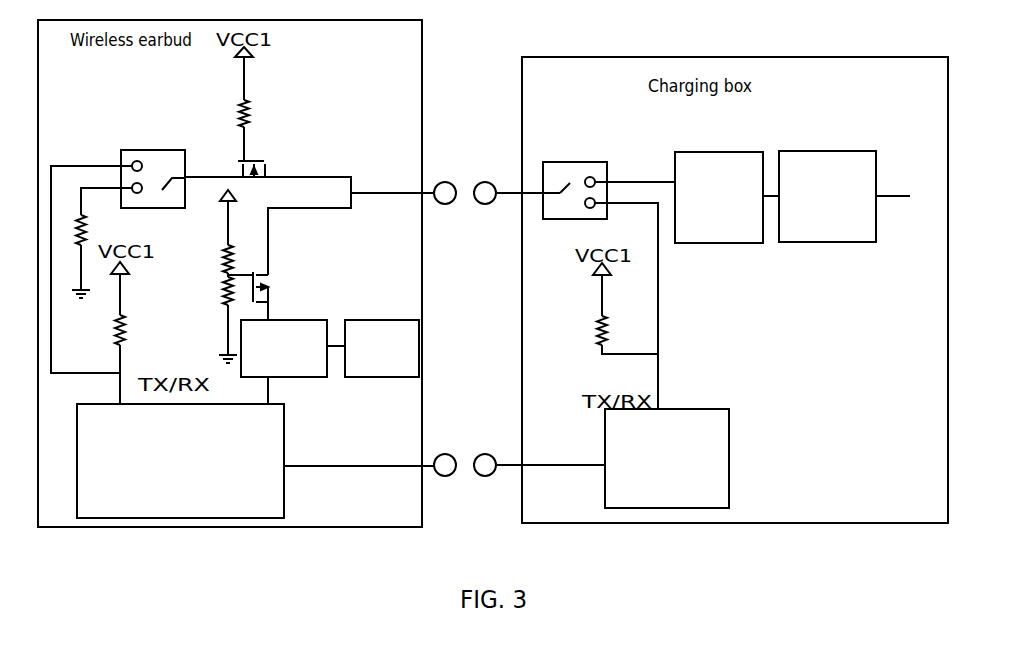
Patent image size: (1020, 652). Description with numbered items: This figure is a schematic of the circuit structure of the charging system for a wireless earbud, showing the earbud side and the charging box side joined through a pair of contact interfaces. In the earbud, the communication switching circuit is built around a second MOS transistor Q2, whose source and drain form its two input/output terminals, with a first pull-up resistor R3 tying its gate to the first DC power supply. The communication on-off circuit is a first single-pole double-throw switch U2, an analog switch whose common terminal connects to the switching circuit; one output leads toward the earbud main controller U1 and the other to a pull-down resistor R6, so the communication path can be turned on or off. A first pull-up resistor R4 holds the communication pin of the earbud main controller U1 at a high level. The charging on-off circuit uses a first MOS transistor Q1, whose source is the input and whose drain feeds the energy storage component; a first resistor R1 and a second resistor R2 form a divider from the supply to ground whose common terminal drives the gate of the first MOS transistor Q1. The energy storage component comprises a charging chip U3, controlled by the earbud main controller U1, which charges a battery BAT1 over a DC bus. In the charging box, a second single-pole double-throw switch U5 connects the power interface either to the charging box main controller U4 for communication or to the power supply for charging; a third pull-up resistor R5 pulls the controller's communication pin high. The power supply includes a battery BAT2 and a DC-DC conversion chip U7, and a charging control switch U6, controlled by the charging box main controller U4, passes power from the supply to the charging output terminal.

The earbud main controller U1 is at (180, 450).
The first single-pole double-throw switch U2 is at (153, 168).
The charging chip U3 is at (284, 339).
The charging box main controller U4 is at (667, 450).
The second single-pole double-throw switch U5 is at (575, 181).
The charging control switch U6 is at (719, 186).
The DC-DC conversion chip U7 is at (827, 187).
The first MOS transistor Q1 is at (277, 294).
The second MOS transistor Q2 is at (270, 161).
The first resistor R1 is at (212, 259).
The second resistor R2 is at (212, 291).
The first pull-up resistor R3 is at (261, 113).
The first pull-up resistor R4 is at (136, 330).
The third pull-up resistor R5 is at (586, 330).
The pull-down resistor R6 is at (98, 230).
The battery BAT1 is at (382, 339).
The battery BAT2 is at (904, 188).